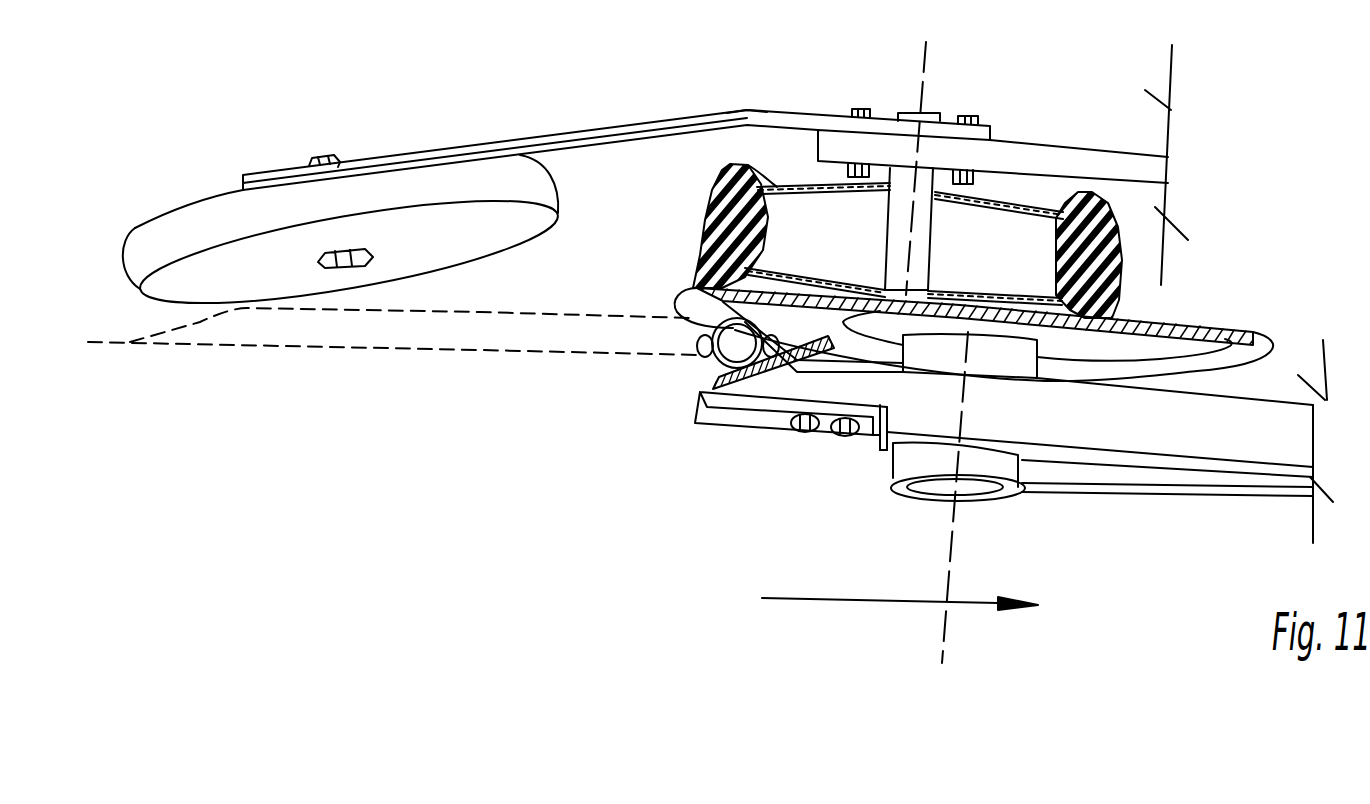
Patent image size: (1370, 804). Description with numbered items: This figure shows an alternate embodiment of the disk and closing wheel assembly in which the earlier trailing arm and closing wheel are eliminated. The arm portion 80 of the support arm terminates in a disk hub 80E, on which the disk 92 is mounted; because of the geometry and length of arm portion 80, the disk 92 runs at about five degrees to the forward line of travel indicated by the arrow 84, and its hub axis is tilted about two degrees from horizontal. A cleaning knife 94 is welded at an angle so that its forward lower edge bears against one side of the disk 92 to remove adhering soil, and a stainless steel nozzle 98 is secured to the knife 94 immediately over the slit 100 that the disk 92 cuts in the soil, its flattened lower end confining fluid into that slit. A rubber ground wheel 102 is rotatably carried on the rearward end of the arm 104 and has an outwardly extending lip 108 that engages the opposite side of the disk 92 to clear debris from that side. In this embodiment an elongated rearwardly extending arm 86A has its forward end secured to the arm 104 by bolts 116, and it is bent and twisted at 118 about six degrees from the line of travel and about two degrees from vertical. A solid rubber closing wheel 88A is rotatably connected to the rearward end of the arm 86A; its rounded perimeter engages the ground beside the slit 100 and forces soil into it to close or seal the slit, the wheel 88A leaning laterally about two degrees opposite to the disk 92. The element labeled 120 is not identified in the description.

The arm portion 80 is at (1230, 463).
The disk hub 80E is at (905, 484).
The arrow indicating line of travel 84 is at (805, 598).
The elongated rearwardly extending arm 86A is at (627, 125).
The closing wheel 88A is at (193, 218).
The disk 92 is at (1262, 330).
The cleaning knife 94 is at (805, 348).
The nozzle 98 is at (698, 343).
The slit 100 is at (370, 346).
The ground wheel 102 is at (717, 180).
The arm 104 is at (1128, 150).
The outwardly extending lip 108 is at (695, 285).
The bolts 116 is at (961, 115).
The bend and twist of arm 118 is at (745, 107).
The fastener 120 is at (330, 266).